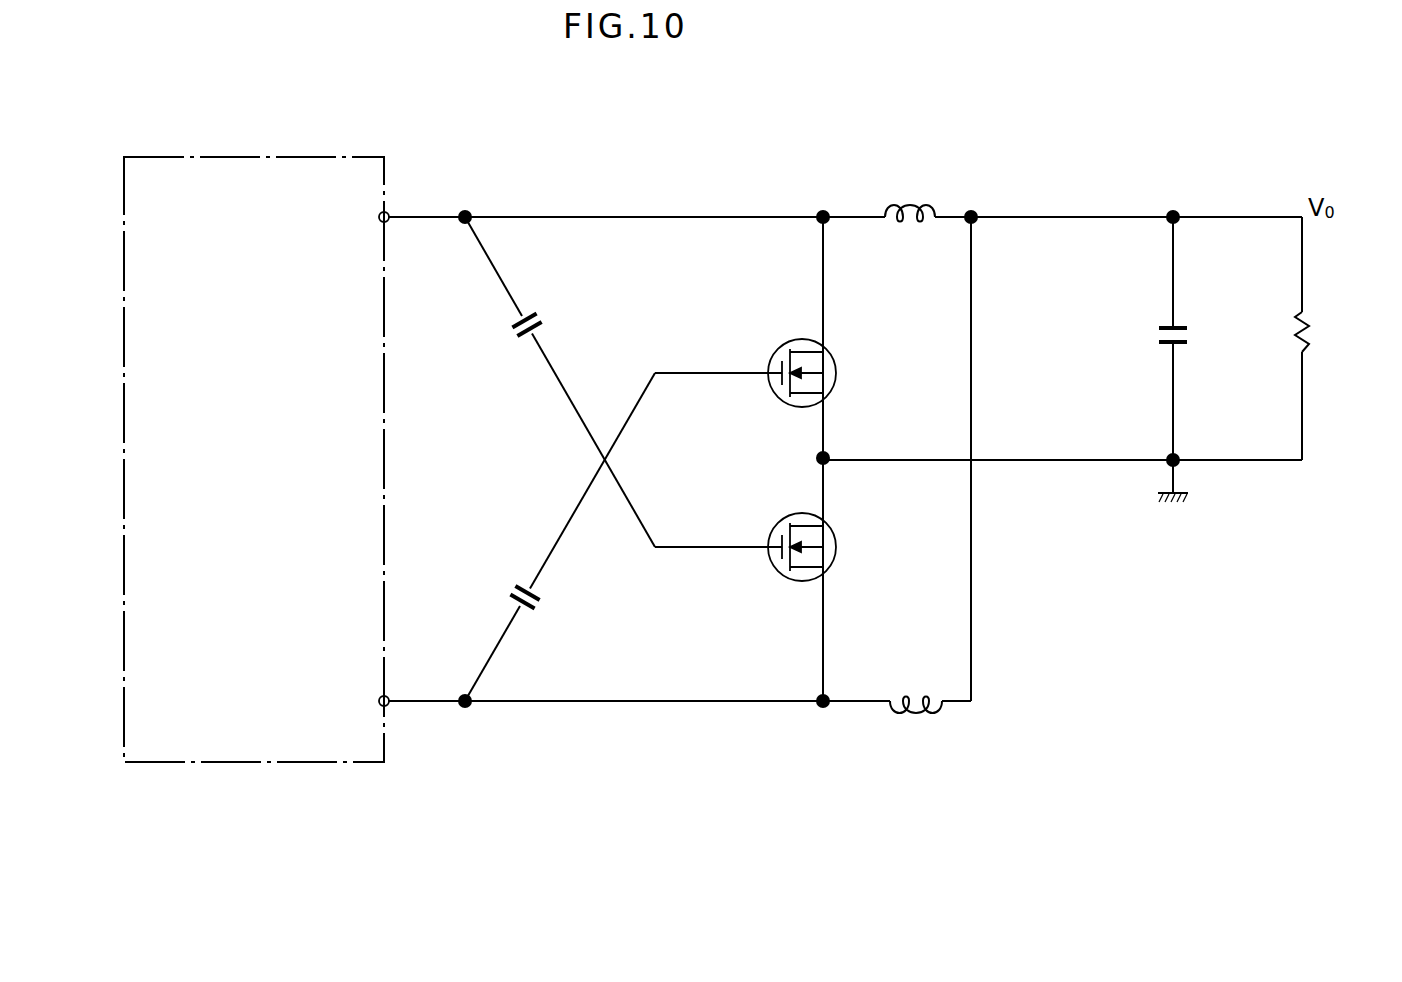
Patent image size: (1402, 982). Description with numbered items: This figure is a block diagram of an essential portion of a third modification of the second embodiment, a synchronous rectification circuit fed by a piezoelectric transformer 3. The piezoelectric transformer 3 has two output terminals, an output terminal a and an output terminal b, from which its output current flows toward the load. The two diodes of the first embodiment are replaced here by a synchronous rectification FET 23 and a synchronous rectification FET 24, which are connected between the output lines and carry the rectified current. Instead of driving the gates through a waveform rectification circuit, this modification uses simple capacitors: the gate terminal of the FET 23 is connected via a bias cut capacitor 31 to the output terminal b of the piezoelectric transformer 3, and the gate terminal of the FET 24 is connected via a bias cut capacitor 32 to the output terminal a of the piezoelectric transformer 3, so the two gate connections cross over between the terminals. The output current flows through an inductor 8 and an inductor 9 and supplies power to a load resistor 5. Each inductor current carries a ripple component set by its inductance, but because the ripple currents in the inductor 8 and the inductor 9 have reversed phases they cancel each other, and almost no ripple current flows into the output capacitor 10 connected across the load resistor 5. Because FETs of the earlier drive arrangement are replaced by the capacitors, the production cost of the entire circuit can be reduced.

The piezoelectric transformer 3 is at (280, 157).
The output terminal a is at (388, 214).
The output terminal b is at (388, 705).
The bias cut capacitor 32 is at (540, 316).
The bias cut capacitor 31 is at (538, 604).
The synchronous rectification FET 23 is at (837, 376).
The synchronous rectification FET 24 is at (837, 550).
The inductor 8 is at (914, 208).
The inductor 9 is at (914, 714).
The output capacitor 10 is at (1188, 337).
The load resistor 5 is at (1310, 340).